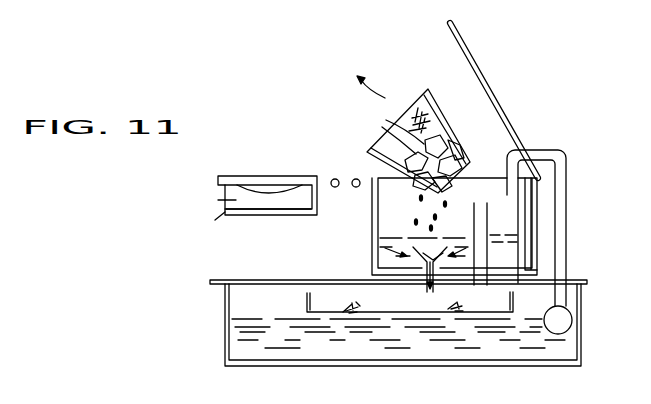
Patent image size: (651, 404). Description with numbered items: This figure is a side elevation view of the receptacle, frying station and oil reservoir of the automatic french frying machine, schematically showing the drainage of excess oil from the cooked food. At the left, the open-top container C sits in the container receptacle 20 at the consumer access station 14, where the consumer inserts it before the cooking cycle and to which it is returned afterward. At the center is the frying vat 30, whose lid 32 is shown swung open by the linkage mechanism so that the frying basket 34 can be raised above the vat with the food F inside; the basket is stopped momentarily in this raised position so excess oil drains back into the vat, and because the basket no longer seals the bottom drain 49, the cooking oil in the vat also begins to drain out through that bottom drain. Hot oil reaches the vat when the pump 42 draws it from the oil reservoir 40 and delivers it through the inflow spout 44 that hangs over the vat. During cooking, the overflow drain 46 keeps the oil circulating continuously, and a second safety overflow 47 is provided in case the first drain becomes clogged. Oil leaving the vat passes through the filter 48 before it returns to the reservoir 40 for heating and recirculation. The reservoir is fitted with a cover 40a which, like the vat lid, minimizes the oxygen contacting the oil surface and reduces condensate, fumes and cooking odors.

The consumer access station 14 is at (236, 170).
The container C is at (236, 199).
The container receptacle 20 is at (277, 216).
The frying basket 34 is at (437, 93).
The food F is at (396, 132).
The lid 32 is at (476, 61).
The frying vat 30 is at (366, 251).
The overflow drain 46 is at (494, 244).
The second safety overflow 47 is at (518, 250).
The bottom drain 49 is at (423, 281).
The inflow spout 44 is at (556, 148).
The cover 40a is at (228, 278).
The oil reservoir 40 is at (398, 352).
The filter 48 is at (307, 300).
The pump 42 is at (574, 322).